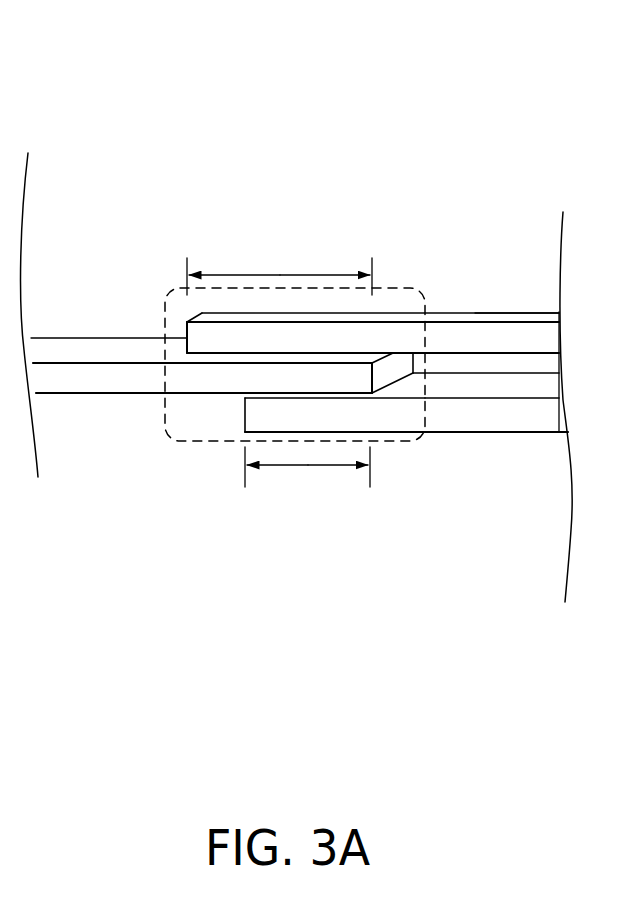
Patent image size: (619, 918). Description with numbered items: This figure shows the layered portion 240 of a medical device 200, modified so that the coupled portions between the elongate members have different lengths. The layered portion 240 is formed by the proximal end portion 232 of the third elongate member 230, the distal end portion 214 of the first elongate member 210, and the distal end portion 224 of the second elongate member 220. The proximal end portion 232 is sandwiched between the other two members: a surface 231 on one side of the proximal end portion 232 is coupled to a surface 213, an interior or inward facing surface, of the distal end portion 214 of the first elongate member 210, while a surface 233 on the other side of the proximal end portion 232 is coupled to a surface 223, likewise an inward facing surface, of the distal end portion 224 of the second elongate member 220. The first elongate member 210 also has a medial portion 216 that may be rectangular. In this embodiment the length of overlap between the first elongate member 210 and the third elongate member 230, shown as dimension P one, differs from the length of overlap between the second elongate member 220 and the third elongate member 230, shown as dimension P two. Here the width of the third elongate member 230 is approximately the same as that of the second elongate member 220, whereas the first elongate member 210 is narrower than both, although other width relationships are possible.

The medical device 200 is at (147, 123).
The first elongate member 210 is at (475, 332).
The surface 213 is at (327, 351).
The distal end portion 214 is at (265, 311).
The medial portion 216 is at (523, 277).
The second elongate member 220 is at (505, 420).
The surface 223 is at (289, 398).
The distal end portion 224 is at (285, 453).
The third elongate member 230 is at (72, 378).
The surface 231 is at (255, 360).
The proximal end portion 232 is at (172, 322).
The surface 233 is at (228, 395).
The layered portion 240 is at (220, 443).